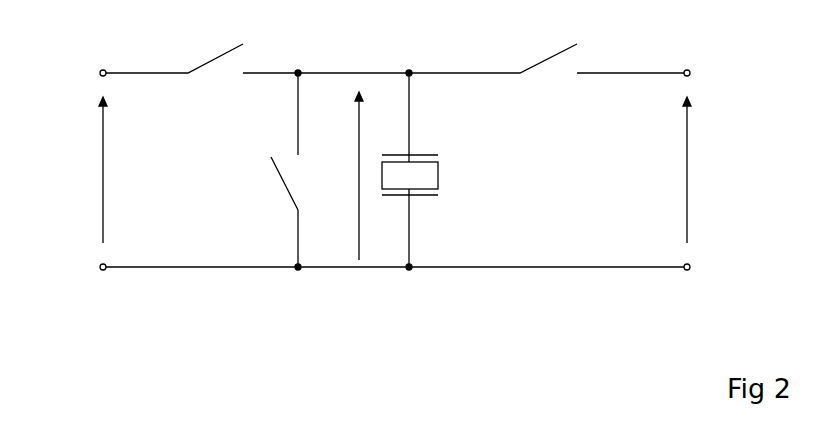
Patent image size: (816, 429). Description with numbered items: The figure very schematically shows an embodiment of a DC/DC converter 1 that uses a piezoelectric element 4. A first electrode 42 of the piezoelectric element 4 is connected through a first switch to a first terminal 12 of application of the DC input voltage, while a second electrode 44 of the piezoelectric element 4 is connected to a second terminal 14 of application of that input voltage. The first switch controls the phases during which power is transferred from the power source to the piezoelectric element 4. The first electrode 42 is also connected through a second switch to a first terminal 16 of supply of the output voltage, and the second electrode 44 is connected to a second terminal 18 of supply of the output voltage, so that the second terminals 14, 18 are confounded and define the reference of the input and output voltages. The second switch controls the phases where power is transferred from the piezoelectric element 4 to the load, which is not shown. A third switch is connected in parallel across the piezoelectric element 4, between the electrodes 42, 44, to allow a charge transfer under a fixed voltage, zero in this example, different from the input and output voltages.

The DC/DC converter 1 is at (385, 333).
The piezoelectric element 4 is at (455, 171).
The first terminal of application of DC input voltage 12 is at (101, 70).
The second terminal of application of voltage 14 is at (101, 270).
The first terminal of supply of voltage 16 is at (689, 70).
The second terminal of supply of voltage 18 is at (689, 270).
The first electrode 42 is at (420, 155).
The second electrode 44 is at (425, 195).